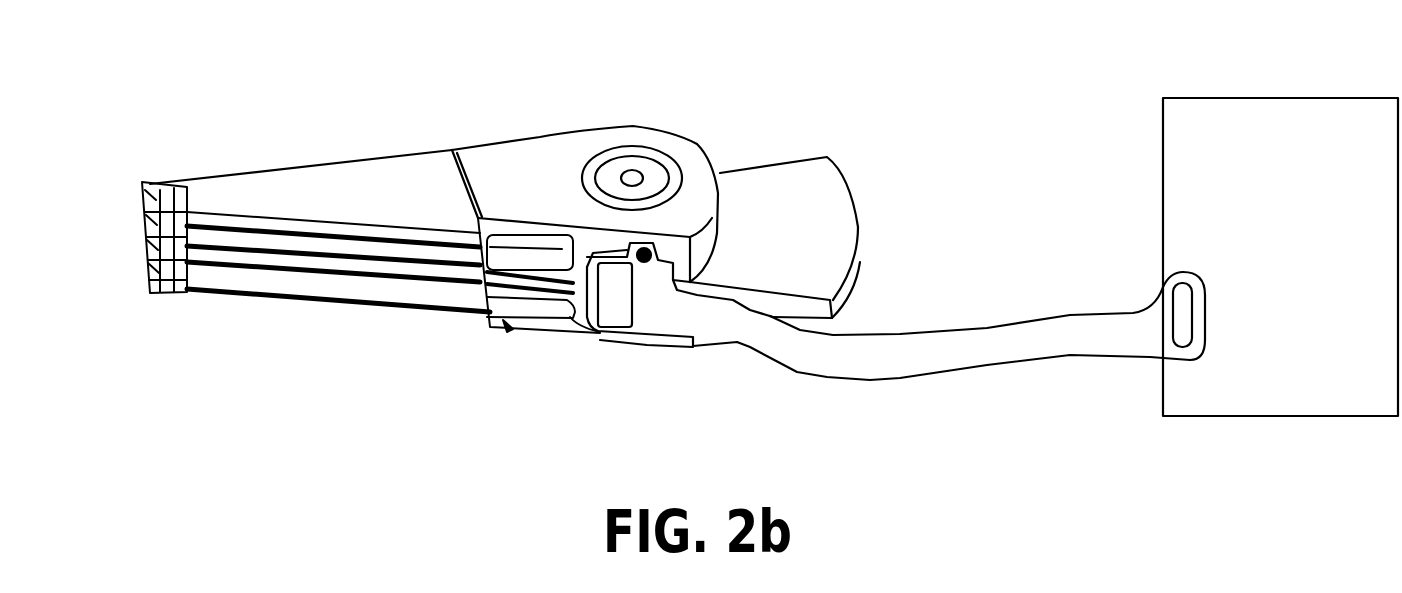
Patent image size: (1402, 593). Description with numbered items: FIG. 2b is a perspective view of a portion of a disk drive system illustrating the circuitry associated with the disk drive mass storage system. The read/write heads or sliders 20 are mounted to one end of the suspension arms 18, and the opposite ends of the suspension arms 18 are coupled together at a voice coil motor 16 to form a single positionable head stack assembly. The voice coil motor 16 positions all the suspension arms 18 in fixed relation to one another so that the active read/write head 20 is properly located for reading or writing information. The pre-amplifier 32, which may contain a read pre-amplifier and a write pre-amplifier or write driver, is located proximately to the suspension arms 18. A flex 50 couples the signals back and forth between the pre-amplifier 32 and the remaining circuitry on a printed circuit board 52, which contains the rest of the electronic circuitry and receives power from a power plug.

The voice coil motor 16 is at (505, 140).
The suspension arm 18 is at (373, 308).
The read/write head 20 is at (125, 200).
The pre-amplifier 32 is at (612, 322).
The flex 50 is at (893, 368).
The printed circuit board 52 is at (1249, 96).